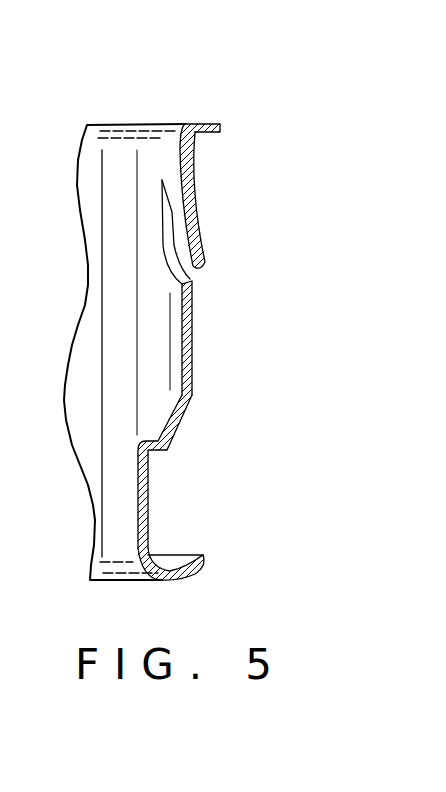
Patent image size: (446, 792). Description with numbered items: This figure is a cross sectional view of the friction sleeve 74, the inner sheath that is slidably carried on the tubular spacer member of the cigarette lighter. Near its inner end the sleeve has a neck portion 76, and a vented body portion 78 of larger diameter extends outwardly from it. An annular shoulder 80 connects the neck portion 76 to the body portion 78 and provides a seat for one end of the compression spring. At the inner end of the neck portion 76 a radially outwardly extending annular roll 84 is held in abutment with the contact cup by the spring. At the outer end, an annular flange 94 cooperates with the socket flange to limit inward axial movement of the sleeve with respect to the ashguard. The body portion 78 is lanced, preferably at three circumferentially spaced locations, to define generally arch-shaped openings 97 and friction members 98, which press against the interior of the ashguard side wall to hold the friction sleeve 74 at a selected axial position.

The friction sleeve 74 is at (148, 90).
The annular flange 94 is at (207, 122).
The vented body portion 78 is at (193, 158).
The friction members 98 is at (200, 238).
The arched shaped openings 97 is at (183, 272).
The neck portion 76 is at (150, 512).
The annular shoulder 80 is at (170, 450).
The annular roll 84 is at (176, 570).